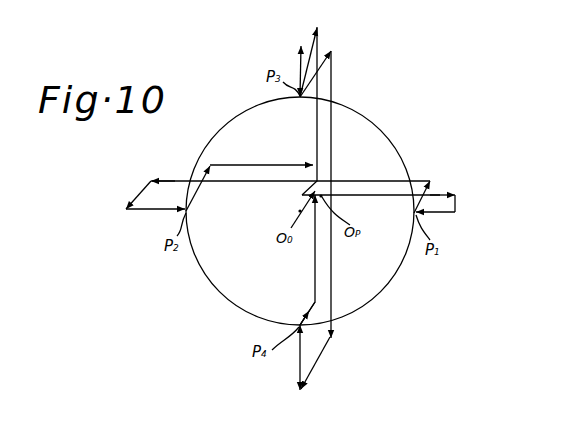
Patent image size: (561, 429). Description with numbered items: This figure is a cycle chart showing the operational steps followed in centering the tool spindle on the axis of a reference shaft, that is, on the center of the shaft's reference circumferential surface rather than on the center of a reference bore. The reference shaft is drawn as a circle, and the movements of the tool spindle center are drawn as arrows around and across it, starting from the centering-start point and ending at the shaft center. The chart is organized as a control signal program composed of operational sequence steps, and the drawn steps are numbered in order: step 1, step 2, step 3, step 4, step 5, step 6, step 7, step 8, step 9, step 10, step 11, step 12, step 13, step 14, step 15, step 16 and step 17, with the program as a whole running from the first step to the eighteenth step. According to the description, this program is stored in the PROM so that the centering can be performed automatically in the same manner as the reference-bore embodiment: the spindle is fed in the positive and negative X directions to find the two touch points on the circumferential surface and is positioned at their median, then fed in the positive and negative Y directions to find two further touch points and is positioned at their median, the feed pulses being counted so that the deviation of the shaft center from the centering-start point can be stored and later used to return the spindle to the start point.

The operational sequence step 1 is at (390, 197).
The operational sequence step 2 is at (457, 196).
The operational sequence step 3 is at (445, 213).
The operational sequence step 4 is at (428, 186).
The operational sequence step 5 is at (370, 180).
The operational sequence step 6 is at (148, 181).
The operational sequence step 7 is at (128, 211).
The operational sequence step 8 is at (200, 184).
The operational sequence step 9 is at (271, 164).
The operational sequence step 10 is at (316, 120).
The operational sequence step 11 is at (315, 31).
The operational sequence step 12 is at (300, 48).
The operational sequence step 13 is at (332, 64).
The operational sequence step 14 is at (332, 129).
The operational sequence step 15 is at (321, 360).
The operational sequence step 16 is at (299, 384).
The operational sequence step 17 is at (304, 320).